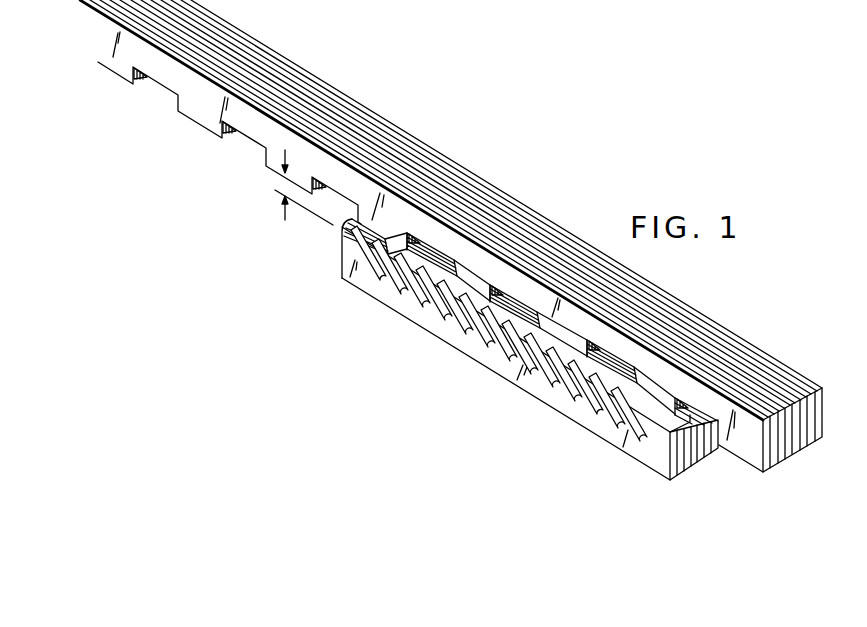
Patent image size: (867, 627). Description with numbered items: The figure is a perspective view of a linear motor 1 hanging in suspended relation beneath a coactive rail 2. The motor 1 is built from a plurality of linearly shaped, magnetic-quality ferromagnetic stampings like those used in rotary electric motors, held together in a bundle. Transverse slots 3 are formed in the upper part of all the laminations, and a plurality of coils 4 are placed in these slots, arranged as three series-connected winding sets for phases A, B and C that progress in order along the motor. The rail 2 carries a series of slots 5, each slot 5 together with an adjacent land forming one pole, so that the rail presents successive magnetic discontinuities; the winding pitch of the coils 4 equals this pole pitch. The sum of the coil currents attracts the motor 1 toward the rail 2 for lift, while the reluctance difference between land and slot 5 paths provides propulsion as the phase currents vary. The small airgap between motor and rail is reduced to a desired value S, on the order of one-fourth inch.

The motor 1 is at (515, 359).
The rail 2 is at (500, 178).
The transverse slots 3 is at (340, 247).
The coils 4 is at (470, 325).
The slot 5 is at (262, 148).
The airgap length S is at (300, 191).